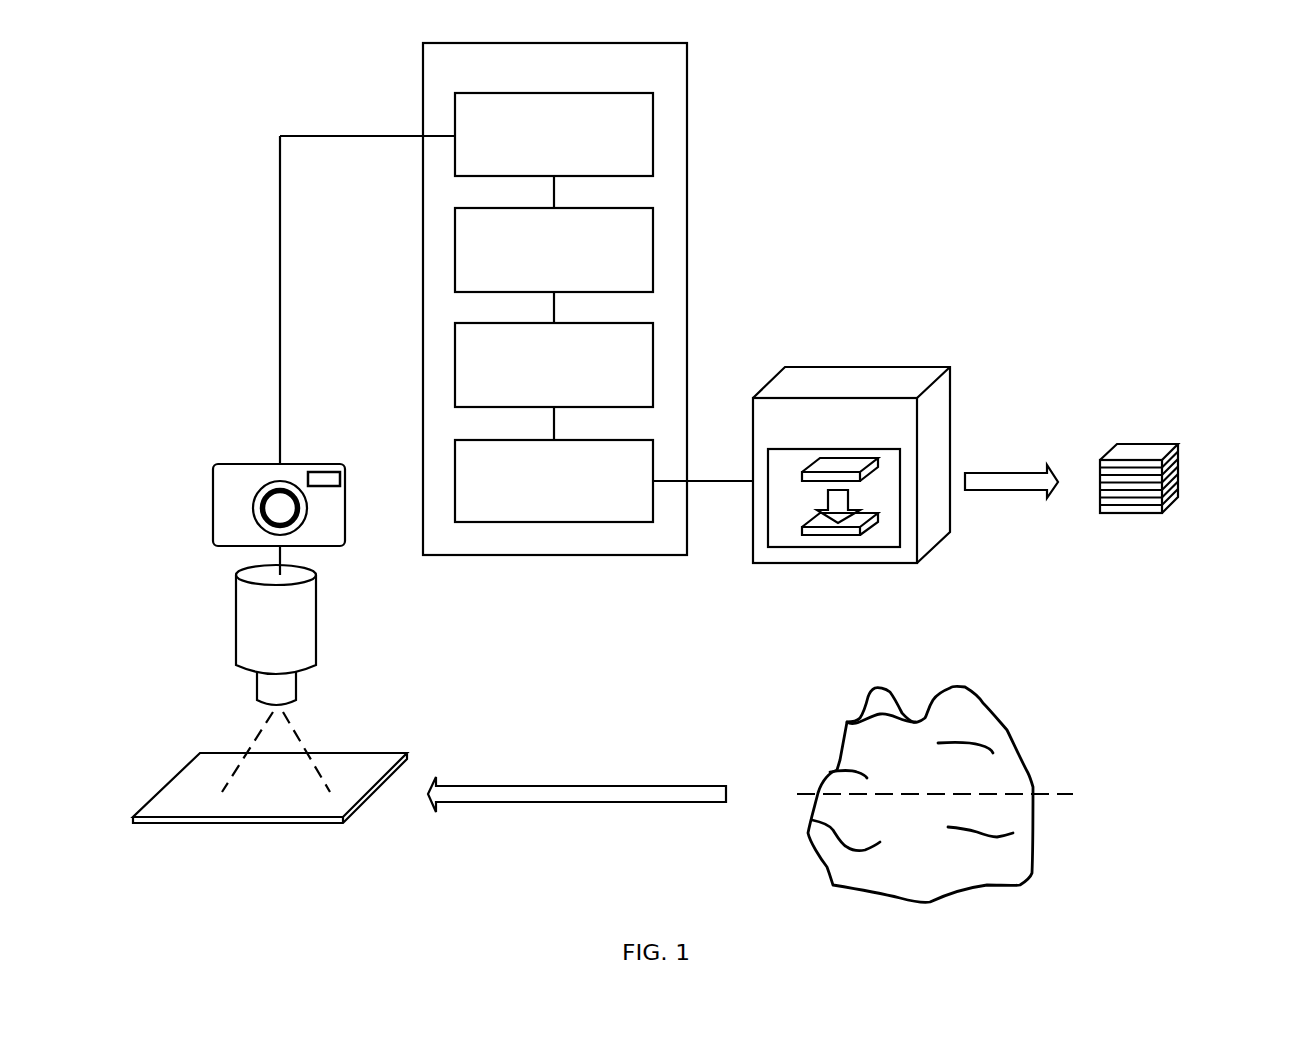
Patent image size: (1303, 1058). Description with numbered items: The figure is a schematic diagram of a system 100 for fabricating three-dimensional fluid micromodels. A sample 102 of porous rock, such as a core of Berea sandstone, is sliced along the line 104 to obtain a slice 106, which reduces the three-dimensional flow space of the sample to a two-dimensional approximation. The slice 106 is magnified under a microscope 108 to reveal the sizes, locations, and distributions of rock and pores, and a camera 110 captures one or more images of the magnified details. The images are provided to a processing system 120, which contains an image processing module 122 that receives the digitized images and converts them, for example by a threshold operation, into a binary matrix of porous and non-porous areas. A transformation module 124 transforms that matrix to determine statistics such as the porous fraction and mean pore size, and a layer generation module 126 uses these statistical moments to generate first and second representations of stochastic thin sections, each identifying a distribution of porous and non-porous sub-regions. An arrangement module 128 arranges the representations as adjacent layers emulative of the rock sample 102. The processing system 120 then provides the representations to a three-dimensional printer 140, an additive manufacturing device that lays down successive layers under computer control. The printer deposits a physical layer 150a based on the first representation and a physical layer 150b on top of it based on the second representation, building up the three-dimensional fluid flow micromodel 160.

The system 100 is at (186, 104).
The sample 102 is at (984, 703).
The line 104 is at (1040, 795).
The slice 106 is at (345, 824).
The microscope 108 is at (236, 626).
The camera 110 is at (213, 505).
The processing system 120 is at (555, 299).
The image processing module 122 is at (554, 134).
The transformation module 124 is at (554, 250).
The layer generation module 126 is at (554, 365).
The arrangement module 128 is at (554, 481).
The 3D printer 140 is at (851, 465).
The physical 3D layer 150a is at (817, 533).
The physical 3D layer 150b is at (868, 475).
The 3D fluid flow micromodel 160 is at (1111, 435).